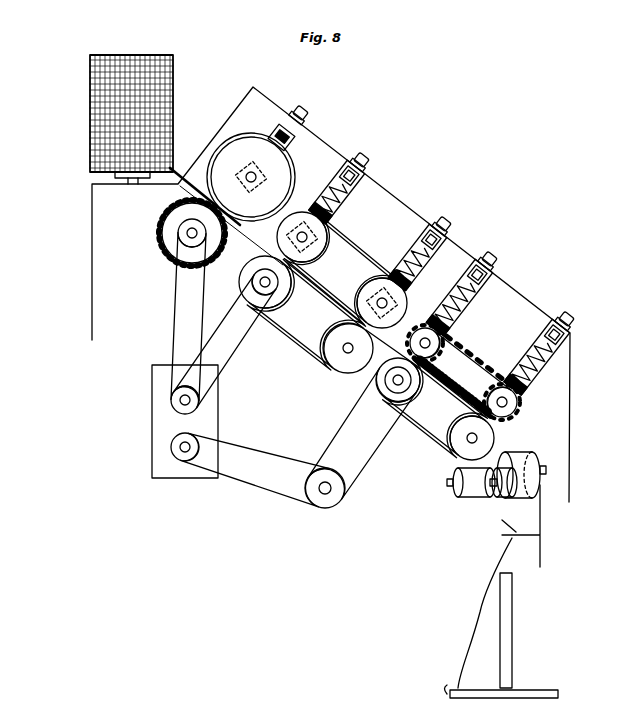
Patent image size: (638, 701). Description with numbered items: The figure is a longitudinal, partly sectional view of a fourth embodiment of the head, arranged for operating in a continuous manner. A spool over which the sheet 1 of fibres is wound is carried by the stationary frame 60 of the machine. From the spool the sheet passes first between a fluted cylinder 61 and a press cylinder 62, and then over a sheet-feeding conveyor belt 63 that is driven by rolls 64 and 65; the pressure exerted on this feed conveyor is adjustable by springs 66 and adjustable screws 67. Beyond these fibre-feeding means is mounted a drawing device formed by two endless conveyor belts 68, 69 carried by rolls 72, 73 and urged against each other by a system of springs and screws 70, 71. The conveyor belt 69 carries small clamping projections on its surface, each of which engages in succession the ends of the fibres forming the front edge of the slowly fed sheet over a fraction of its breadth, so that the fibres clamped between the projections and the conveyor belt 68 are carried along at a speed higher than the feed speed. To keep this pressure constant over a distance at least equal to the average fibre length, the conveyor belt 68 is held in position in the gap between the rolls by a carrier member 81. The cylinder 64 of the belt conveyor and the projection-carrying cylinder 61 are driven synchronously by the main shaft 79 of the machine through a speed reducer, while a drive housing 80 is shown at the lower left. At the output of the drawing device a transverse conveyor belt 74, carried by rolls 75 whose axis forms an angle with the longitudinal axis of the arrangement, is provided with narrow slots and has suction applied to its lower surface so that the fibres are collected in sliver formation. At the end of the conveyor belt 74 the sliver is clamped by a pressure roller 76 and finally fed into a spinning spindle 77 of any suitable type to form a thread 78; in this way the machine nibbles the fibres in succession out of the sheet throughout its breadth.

The sheet 1 is at (128, 58).
The stationary frame 60 is at (262, 96).
The fluted cylinder 61 is at (160, 226).
The press cylinder 62 is at (282, 162).
The sheet-feeding conveyor belt 63 is at (367, 243).
The roll 64 is at (315, 250).
The roll 65 is at (382, 303).
The springs 66 is at (333, 213).
The adjustable screws 67 is at (364, 165).
The endless conveyor belt 68 is at (432, 440).
The endless conveyor belt 69 is at (477, 350).
The springs 70 is at (460, 318).
The screws 71 is at (494, 278).
The roll 72 is at (423, 330).
The roll 73 is at (520, 406).
The transverse conveyor belt 74 is at (490, 497).
The rolls 75 is at (470, 496).
The pressure roller 76 is at (540, 478).
The spinning spindle 77 is at (507, 629).
The thread 78 is at (466, 612).
The main shaft 79 is at (325, 492).
The drive housing 80 is at (160, 421).
The carrier member 81 is at (454, 389).